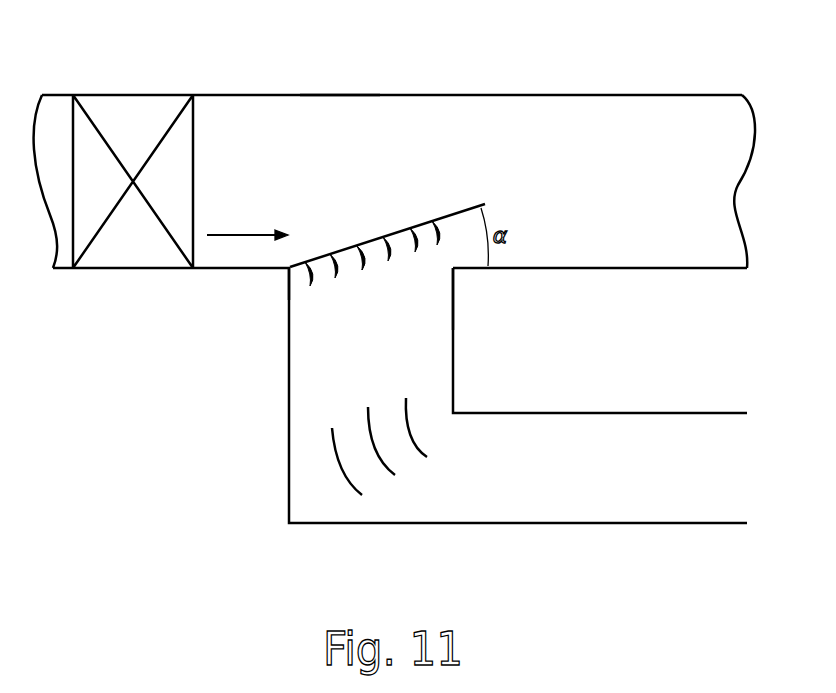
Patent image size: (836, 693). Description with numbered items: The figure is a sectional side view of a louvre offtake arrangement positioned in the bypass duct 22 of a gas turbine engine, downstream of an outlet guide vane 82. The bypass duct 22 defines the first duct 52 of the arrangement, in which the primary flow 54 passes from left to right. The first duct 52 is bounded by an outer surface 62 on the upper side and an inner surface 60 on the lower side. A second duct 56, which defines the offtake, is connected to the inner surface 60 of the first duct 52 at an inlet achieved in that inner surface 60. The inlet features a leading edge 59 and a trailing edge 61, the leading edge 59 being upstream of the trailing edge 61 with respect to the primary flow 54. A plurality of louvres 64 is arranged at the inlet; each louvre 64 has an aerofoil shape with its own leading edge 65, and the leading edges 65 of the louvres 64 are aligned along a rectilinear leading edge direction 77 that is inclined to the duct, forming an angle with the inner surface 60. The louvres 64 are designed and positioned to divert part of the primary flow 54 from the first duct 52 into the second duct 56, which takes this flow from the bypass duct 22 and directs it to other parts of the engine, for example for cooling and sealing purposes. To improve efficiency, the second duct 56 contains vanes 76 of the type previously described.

The bypass duct 22 is at (640, 150).
The first duct 52 is at (687, 150).
The outlet guide vane 82 is at (133, 122).
The primary flow 54 is at (247, 234).
The outer surface 62 is at (335, 104).
The inner surface 60 is at (666, 258).
The rectilinear leading edge direction 77 is at (460, 212).
The leading edge 65 is at (356, 246).
The louvres 64 is at (384, 249).
The leading edge 59 is at (288, 271).
The second duct 56 is at (434, 350).
The trailing edge 61 is at (456, 270).
The vanes 76 is at (412, 452).